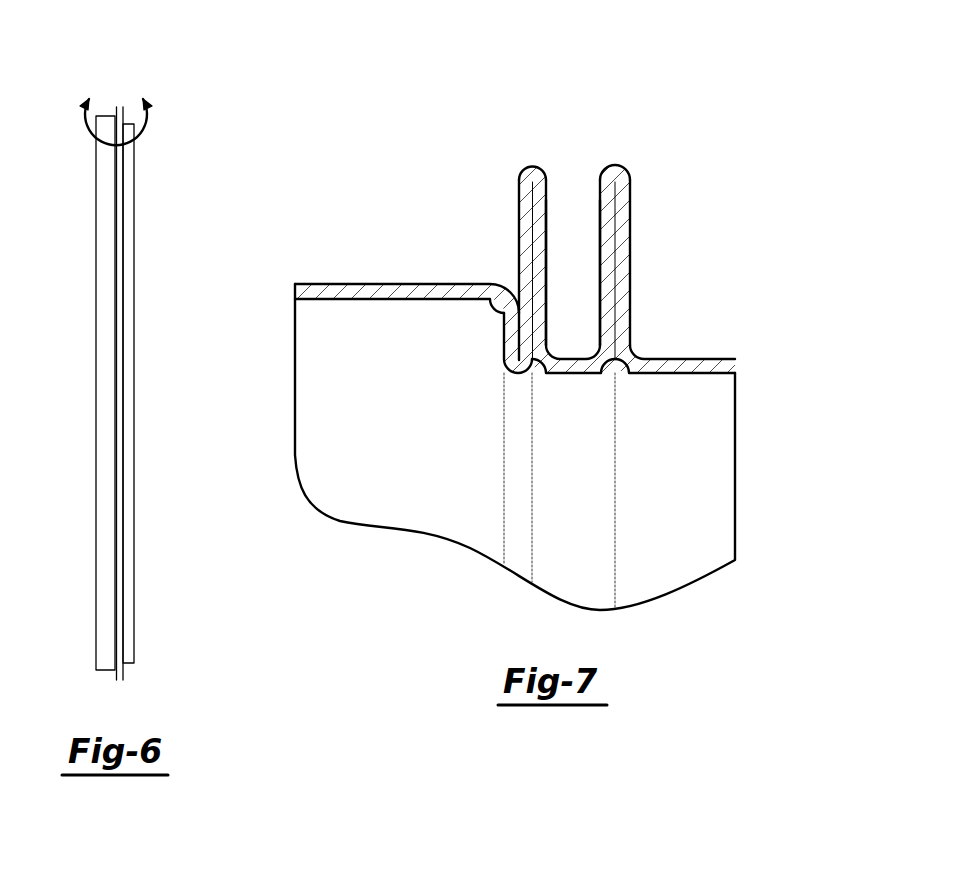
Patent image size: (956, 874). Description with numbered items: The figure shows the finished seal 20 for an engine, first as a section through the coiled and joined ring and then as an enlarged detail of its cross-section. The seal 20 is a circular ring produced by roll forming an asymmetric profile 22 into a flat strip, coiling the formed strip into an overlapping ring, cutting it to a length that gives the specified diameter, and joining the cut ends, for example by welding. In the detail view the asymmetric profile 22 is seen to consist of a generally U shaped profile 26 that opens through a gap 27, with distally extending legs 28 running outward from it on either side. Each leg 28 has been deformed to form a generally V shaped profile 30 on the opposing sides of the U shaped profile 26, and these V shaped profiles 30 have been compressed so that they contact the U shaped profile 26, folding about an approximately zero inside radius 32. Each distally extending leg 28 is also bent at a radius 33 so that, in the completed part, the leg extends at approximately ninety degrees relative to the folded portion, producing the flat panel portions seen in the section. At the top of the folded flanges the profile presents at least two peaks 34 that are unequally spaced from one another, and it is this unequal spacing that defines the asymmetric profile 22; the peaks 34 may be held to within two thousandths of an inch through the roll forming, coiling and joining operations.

In FIG. 6, the seal 20 is at (96, 308).
In FIG. 7, the seal 20 is at (346, 544).
In FIG. 6, the asymmetric profile 22 is at (143, 60).
In FIG. 7, the asymmetric profile 22 is at (613, 128).
In FIG. 7, the U shaped profile 26 is at (566, 374).
In FIG. 7, the gap 27 is at (575, 243).
In FIG. 7, the distally extending legs 28 is at (300, 284).
In FIG. 7, the V shaped profile 30 is at (518, 242).
In FIG. 7, the radius 32 is at (522, 165).
In FIG. 7, the radius 33 is at (518, 374).
In FIG. 7, the peaks 34 is at (546, 168).